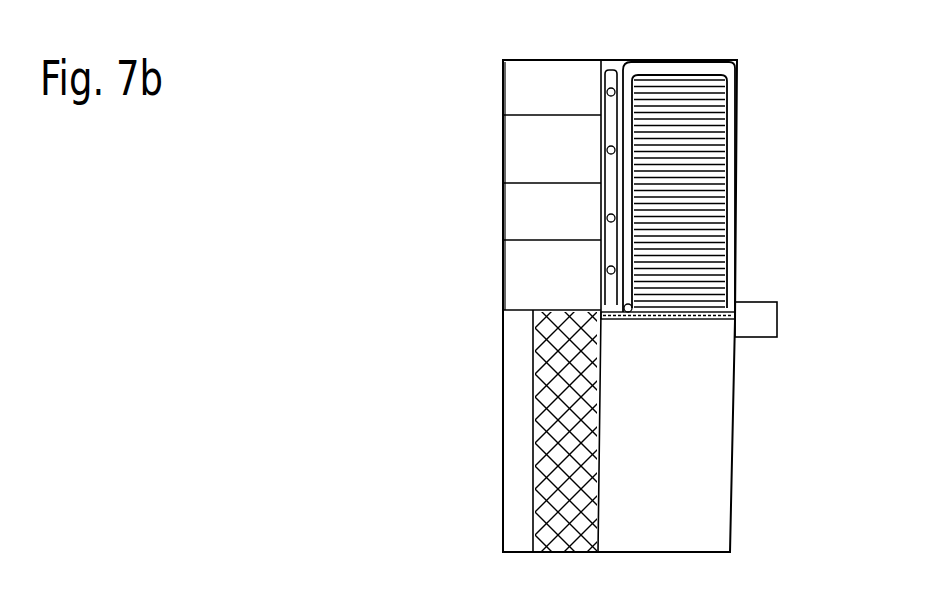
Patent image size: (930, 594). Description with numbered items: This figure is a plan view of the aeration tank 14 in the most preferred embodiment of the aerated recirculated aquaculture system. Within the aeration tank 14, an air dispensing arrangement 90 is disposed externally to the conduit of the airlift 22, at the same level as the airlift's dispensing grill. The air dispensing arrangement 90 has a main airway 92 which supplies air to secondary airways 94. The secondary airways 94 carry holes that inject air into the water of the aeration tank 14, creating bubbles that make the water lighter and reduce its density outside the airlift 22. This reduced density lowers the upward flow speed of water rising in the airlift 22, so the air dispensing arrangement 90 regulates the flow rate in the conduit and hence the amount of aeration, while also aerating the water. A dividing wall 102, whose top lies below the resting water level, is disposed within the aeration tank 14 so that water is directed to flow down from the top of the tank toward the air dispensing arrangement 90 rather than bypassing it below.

The aeration tank 14 is at (563, 58).
The airlift 22 is at (503, 92).
The secondary airways 94 is at (662, 85).
The main airway 92 is at (737, 87).
The air dispensing arrangement 90 is at (735, 148).
The dividing wall 102 is at (695, 320).